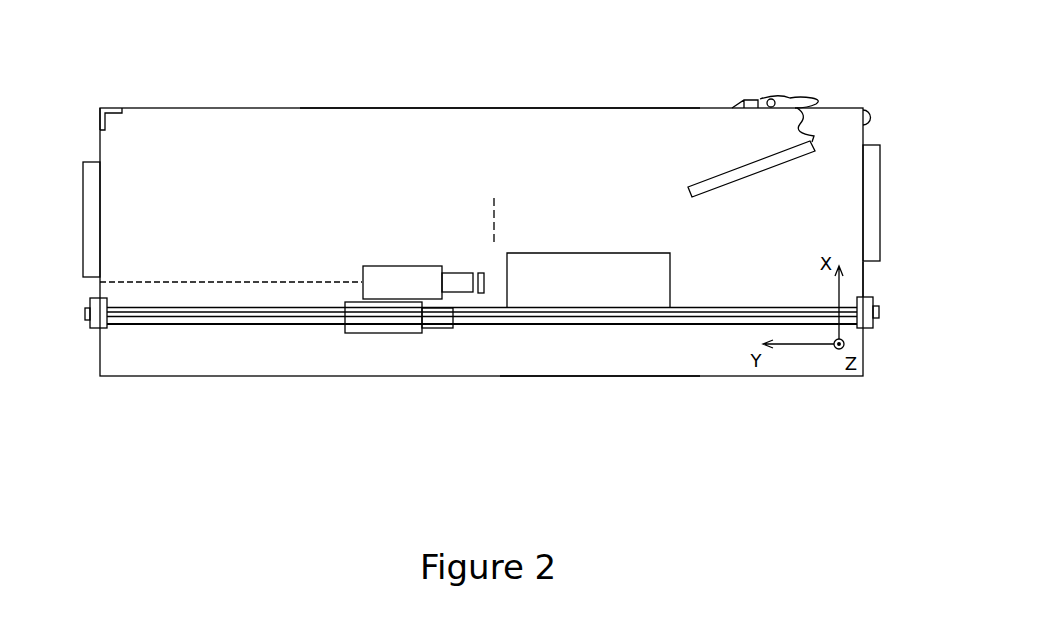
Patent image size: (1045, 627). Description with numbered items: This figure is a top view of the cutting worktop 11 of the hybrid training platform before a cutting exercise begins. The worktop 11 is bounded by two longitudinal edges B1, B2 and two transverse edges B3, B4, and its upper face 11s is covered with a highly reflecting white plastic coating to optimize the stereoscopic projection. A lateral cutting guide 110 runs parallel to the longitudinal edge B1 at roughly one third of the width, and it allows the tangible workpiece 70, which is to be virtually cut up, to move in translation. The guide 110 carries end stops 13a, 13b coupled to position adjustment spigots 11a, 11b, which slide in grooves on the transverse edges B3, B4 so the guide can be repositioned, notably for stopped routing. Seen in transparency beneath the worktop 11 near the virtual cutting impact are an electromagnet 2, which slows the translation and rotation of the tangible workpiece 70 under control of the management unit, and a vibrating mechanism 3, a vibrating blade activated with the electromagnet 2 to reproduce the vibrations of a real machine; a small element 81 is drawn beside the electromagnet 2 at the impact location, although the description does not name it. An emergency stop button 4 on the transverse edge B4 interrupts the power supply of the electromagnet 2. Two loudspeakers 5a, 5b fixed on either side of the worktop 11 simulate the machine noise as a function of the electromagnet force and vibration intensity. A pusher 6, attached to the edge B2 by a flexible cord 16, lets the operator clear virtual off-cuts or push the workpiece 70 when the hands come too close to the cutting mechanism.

The electromagnet 2 is at (383, 265).
The vibrating mechanism 3 is at (418, 335).
The emergency stop button 4 is at (870, 110).
The loudspeaker 5a is at (83, 205).
The loudspeaker 5b is at (880, 170).
The pusher 6 is at (757, 183).
The worktop 11 is at (191, 380).
The position adjustment spigot 11a is at (85, 318).
The position adjustment spigot 11b is at (879, 313).
The upper face 11s is at (643, 120).
The end stop 13a is at (90, 298).
The end stop 13b is at (872, 330).
The flexible cord 16 is at (803, 98).
The tangible workpiece 70 is at (622, 253).
The sensor 81 is at (466, 245).
The lateral cutting guide 110 is at (686, 308).
The longitudinal edge B1 is at (624, 377).
The longitudinal edge B2 is at (491, 108).
The transverse edge B3 is at (99, 110).
The transverse edge B4 is at (865, 273).